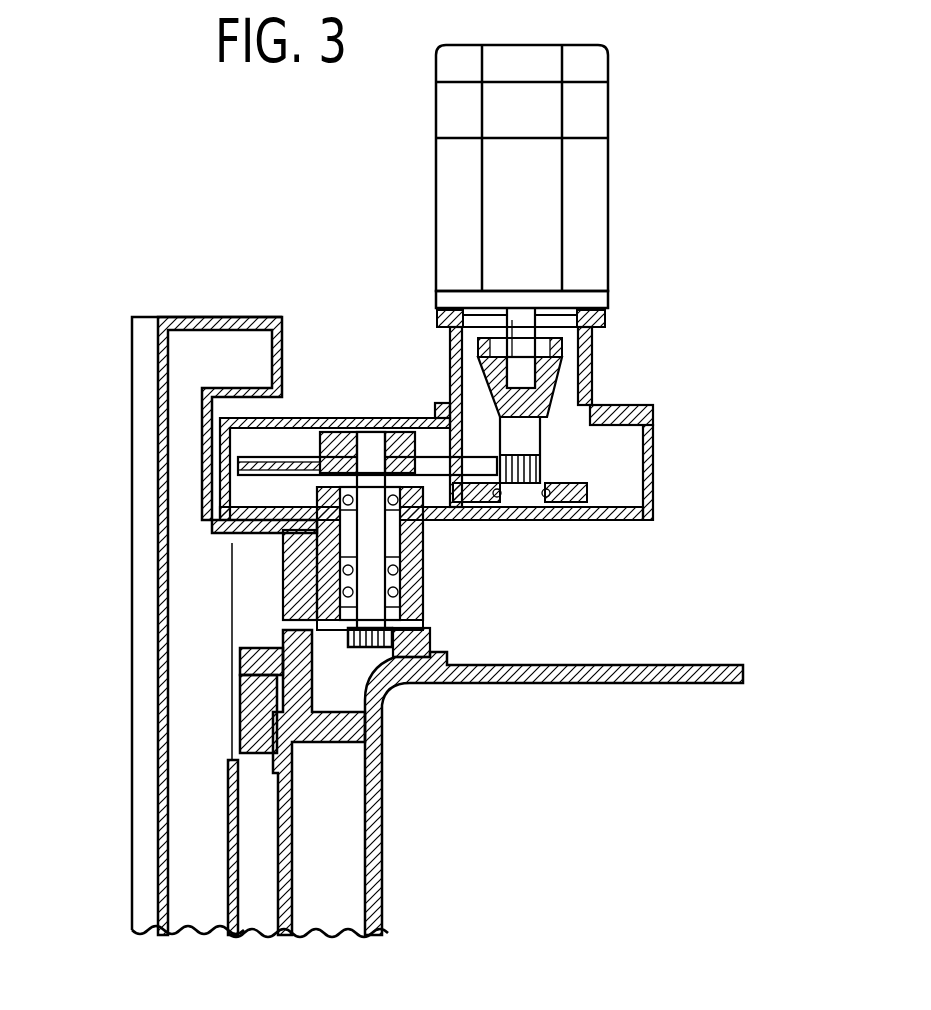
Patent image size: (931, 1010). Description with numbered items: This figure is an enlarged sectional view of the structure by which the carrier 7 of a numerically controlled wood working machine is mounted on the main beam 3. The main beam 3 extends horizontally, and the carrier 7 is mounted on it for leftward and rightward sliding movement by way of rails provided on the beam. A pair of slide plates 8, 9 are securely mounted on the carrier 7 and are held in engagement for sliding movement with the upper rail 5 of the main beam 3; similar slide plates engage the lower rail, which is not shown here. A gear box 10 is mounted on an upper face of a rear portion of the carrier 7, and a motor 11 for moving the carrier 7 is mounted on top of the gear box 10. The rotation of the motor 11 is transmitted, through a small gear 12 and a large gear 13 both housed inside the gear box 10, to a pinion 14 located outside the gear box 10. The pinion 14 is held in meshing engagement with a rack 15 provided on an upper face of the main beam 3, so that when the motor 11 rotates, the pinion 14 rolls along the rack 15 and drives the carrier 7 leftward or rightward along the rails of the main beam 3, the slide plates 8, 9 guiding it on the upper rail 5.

The main beam 3 is at (692, 663).
The upper rail 5 is at (237, 718).
The carrier 7 is at (160, 466).
The slide plate 8 is at (235, 660).
The slide plate 9 is at (235, 693).
The gear box 10 is at (625, 523).
The motor 11 is at (585, 185).
The small gear 12 is at (543, 463).
The large gear 13 is at (438, 513).
The pinion 14 is at (383, 697).
The rack 15 is at (430, 635).